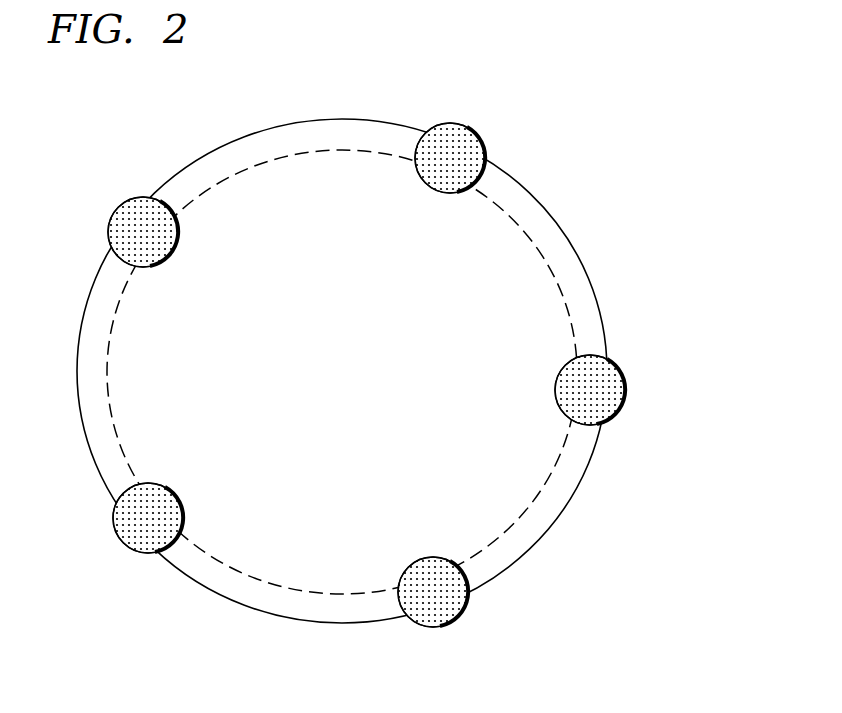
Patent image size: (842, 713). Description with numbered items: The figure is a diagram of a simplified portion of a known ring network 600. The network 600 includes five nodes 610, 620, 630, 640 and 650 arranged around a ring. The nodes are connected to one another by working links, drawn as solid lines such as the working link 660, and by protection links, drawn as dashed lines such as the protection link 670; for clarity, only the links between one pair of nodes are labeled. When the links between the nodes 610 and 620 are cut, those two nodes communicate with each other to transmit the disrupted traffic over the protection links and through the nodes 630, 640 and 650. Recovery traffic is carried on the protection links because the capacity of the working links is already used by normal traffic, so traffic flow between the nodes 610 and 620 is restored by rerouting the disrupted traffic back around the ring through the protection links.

The network 600 is at (605, 105).
The node 610 is at (118, 207).
The node 620 is at (475, 129).
The node 630 is at (632, 393).
The node 640 is at (433, 627).
The node 650 is at (115, 540).
The working link 660 is at (344, 117).
The protection link 670 is at (340, 151).